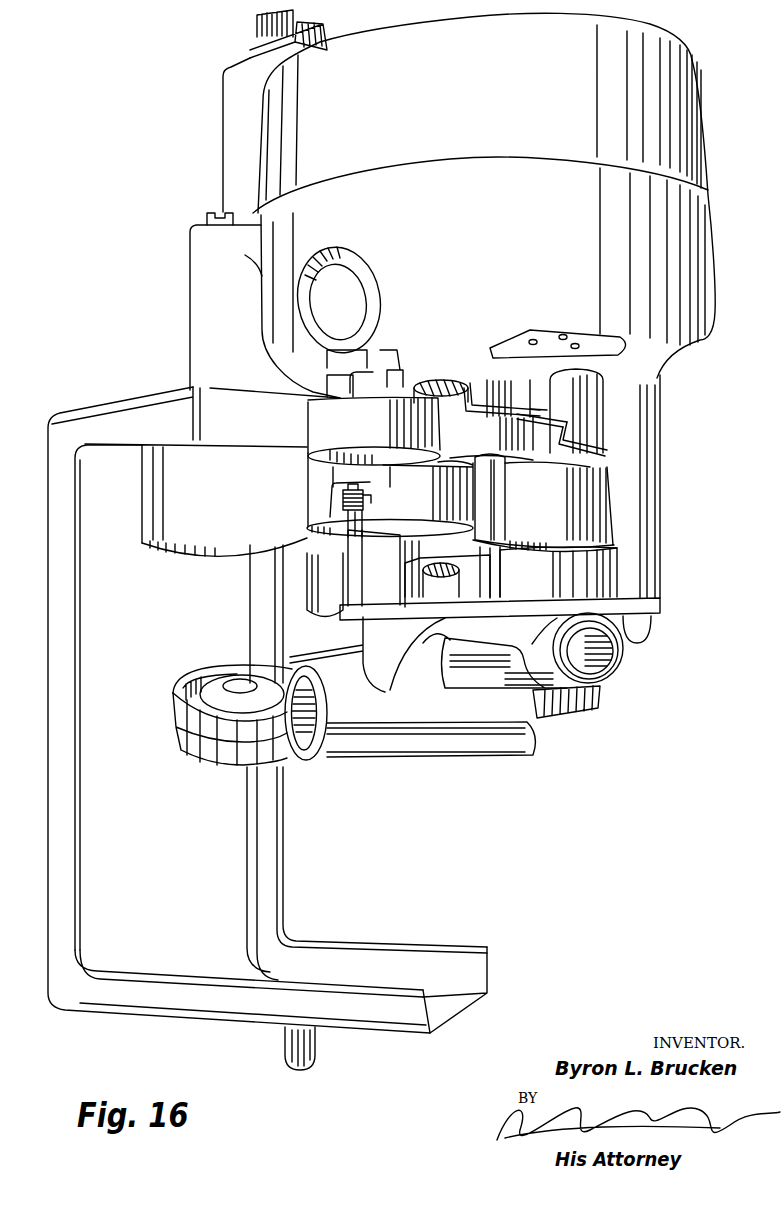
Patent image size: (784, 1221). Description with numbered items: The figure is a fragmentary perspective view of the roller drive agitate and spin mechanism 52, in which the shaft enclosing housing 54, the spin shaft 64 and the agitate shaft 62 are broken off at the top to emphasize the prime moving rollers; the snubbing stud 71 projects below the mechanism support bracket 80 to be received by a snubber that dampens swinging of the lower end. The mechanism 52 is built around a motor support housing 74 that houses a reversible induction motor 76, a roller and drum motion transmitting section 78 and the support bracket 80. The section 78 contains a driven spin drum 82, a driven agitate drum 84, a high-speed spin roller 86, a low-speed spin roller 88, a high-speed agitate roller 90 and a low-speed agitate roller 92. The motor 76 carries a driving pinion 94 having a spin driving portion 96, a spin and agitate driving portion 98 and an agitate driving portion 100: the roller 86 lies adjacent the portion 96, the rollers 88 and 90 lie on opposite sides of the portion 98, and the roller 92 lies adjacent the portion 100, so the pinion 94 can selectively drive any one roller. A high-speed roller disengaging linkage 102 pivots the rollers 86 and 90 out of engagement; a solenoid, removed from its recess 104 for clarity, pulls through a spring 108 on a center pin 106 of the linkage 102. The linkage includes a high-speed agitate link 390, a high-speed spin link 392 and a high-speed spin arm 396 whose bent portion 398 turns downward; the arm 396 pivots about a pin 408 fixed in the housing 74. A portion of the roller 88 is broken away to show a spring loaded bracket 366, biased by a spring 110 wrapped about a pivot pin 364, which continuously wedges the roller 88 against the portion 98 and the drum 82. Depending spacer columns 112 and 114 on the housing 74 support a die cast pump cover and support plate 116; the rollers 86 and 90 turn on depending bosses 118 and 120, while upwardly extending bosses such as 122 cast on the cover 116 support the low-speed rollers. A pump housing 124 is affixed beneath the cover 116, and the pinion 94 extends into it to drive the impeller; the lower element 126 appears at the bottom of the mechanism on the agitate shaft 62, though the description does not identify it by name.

The agitate and spin mechanism 52 is at (187, 230).
The shaft enclosing housing 54 is at (238, 97).
The agitate shaft 62 is at (270, 20).
The spin shaft 64 is at (250, 52).
The snubbing stud 71 is at (308, 1047).
The motor support housing 74 is at (693, 337).
The induction motor 76 is at (687, 120).
The roller and drum motion transmitting section 78 is at (708, 478).
The mechanism support bracket 80 is at (97, 422).
The spin drum 82 is at (155, 527).
The agitate drum 84 is at (317, 580).
The high-speed spin roller 86 is at (313, 403).
The low-speed spin roller 88 is at (323, 495).
The high-speed agitate roller 90 is at (593, 523).
The low-speed agitate roller 92 is at (587, 573).
The driving pinion 94 is at (486, 595).
The spin driving portion 96 is at (463, 383).
The spin and agitate driving portion 98 is at (493, 500).
The agitate driving portion 100 is at (493, 580).
The high-speed roller disengaging linkage 102 is at (567, 421).
The recess 104 is at (587, 340).
The center pin 106 is at (519, 406).
The spring 108 is at (532, 412).
The spring 110 is at (323, 508).
The spacer column 112 is at (648, 582).
The spacer column 114 is at (420, 385).
The pump cover and support plate 116 is at (653, 607).
The depending boss 118 is at (337, 383).
The depending boss 120 is at (603, 380).
The boss 122 is at (383, 578).
The pump housing 124 is at (520, 712).
The bearing 126 is at (192, 757).
The pivot pin 364 is at (342, 490).
The spring loaded bracket 366 is at (366, 503).
The high-speed agitate link 390 is at (590, 448).
The high-speed spin link 392 is at (467, 400).
The high-speed spin arm 396 is at (374, 388).
The bent portion 398 is at (365, 380).
The pin 408 is at (383, 350).